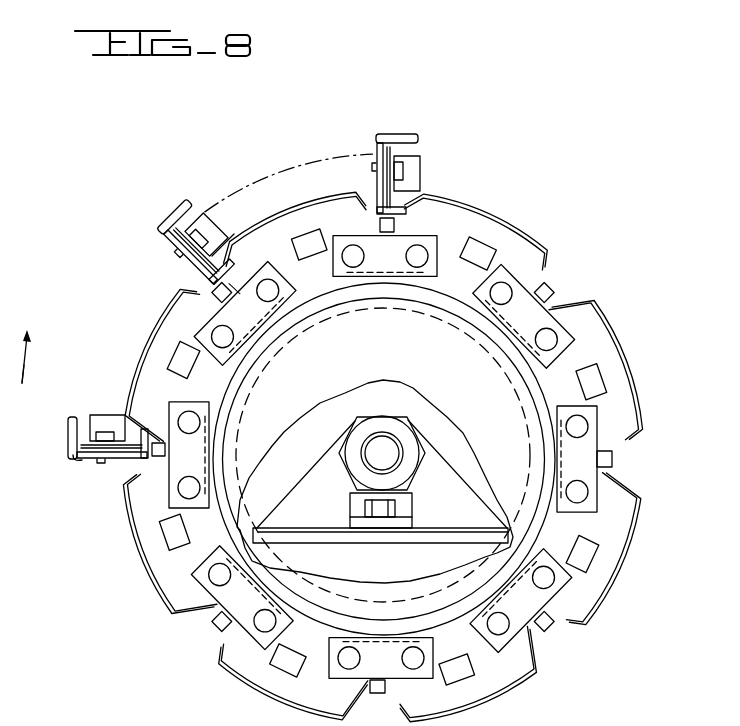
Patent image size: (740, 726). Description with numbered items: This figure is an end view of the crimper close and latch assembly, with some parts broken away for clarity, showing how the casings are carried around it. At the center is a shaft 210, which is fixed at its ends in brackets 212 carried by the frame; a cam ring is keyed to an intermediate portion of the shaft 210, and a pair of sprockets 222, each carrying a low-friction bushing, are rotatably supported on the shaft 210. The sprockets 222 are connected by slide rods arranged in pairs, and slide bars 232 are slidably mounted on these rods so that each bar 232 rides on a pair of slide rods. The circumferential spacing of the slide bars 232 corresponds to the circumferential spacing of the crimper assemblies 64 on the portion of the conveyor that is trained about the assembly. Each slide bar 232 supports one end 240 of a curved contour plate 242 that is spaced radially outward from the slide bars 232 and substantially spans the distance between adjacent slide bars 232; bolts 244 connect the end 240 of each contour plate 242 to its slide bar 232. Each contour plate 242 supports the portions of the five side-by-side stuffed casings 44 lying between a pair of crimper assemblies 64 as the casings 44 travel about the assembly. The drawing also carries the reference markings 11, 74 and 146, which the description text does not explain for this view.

The section line 11 is at (16, 384).
The stuffed casings 44 is at (264, 178).
The crimper assemblies 64 is at (396, 130).
The direction arrow 74 is at (25, 352).
The clamp flange 146 is at (217, 250).
The shaft 210 is at (372, 461).
The brackets 212 is at (434, 476).
The sprockets 222 is at (426, 412).
The slide bars 232 is at (372, 268).
The end of contour plate 240 is at (236, 290).
The contour plate 242 is at (284, 219).
The bolts 244 is at (224, 300).